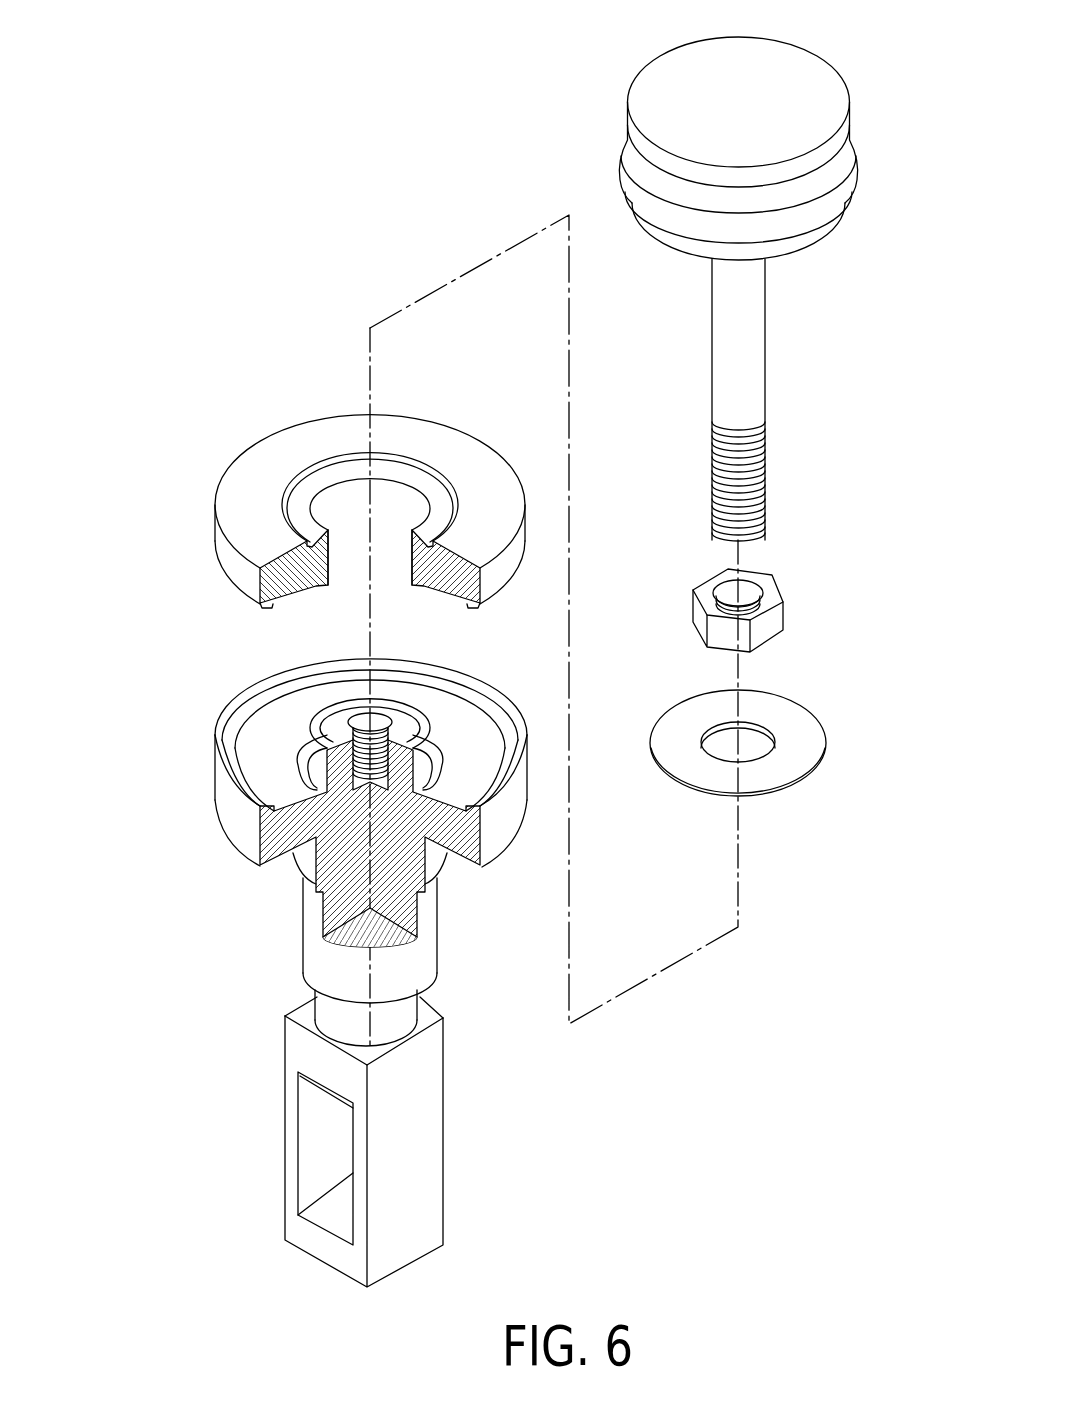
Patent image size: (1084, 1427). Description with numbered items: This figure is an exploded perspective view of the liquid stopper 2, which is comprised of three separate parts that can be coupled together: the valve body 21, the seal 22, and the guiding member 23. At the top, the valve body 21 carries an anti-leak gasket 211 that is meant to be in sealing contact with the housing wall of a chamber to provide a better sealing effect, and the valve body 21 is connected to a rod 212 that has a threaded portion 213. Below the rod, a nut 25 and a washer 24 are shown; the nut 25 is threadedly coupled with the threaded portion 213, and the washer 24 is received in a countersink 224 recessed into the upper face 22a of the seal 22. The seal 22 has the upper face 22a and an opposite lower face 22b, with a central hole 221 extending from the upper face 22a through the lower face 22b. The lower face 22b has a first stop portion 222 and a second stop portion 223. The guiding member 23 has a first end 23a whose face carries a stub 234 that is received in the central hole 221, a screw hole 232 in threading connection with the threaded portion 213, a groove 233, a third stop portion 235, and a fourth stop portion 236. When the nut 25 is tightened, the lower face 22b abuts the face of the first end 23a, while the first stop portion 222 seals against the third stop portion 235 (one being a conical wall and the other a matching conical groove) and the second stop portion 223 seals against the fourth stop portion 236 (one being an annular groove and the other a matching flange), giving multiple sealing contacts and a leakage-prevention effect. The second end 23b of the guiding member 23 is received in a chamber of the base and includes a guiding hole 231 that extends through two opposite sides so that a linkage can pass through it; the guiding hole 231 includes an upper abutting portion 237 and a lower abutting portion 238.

The liquid stopper 2 is at (450, 140).
The valve body 21 is at (822, 75).
The anti-leak gasket 211 is at (850, 180).
The rod 212 is at (755, 357).
The threaded portion 213 is at (765, 477).
The nut 25 is at (767, 593).
The washer 24 is at (802, 722).
The seal 22 is at (223, 542).
The upper face 22a is at (234, 482).
The lower face 22b is at (289, 611).
The central hole 221 is at (355, 487).
The first stop portion 222 is at (328, 590).
The second stop portion 223 is at (471, 608).
The countersink 224 is at (302, 490).
The guiding member 23 is at (440, 1035).
The first end 23a is at (217, 737).
The second end 23b is at (420, 1258).
The guiding hole 231 is at (313, 1146).
The screw hole 232 is at (317, 708).
The groove 233 is at (257, 758).
The stub 234 is at (404, 716).
The third stop portion 235 is at (270, 790).
The fourth stop portion 236 is at (237, 818).
The upper abutting portion 237 is at (330, 1100).
The lower abutting portion 238 is at (330, 1187).